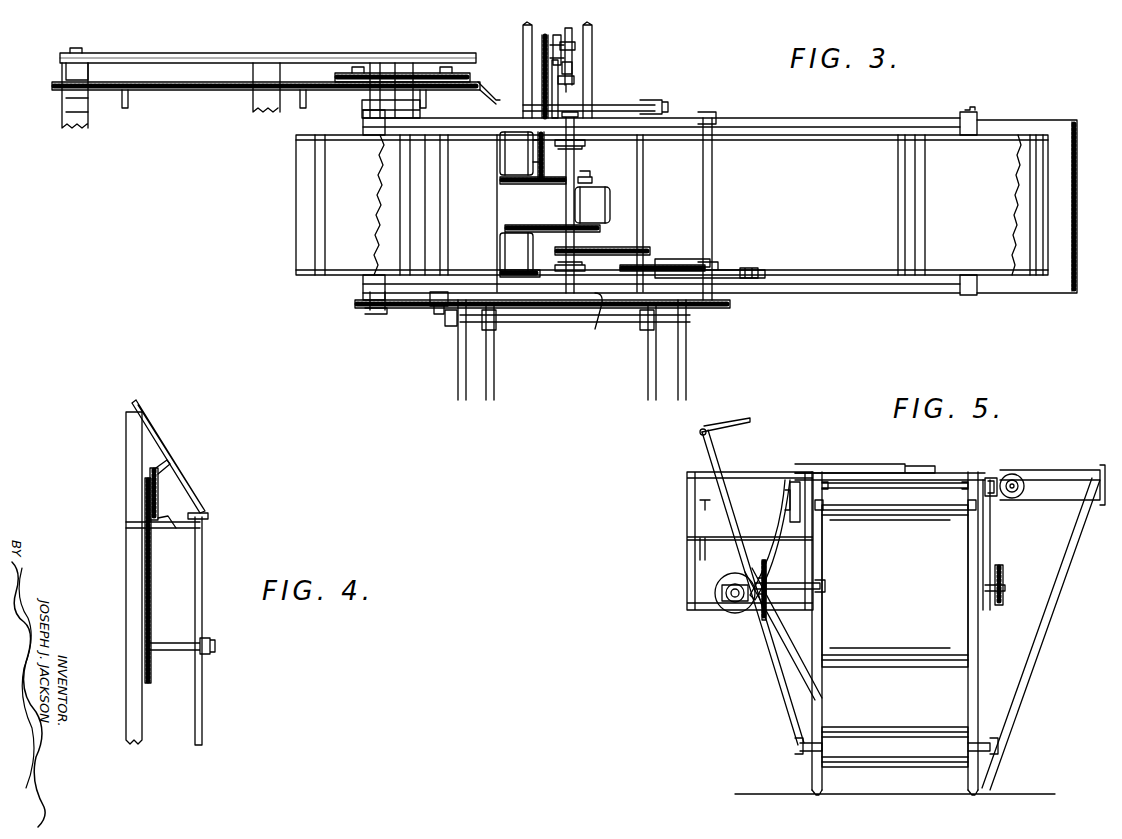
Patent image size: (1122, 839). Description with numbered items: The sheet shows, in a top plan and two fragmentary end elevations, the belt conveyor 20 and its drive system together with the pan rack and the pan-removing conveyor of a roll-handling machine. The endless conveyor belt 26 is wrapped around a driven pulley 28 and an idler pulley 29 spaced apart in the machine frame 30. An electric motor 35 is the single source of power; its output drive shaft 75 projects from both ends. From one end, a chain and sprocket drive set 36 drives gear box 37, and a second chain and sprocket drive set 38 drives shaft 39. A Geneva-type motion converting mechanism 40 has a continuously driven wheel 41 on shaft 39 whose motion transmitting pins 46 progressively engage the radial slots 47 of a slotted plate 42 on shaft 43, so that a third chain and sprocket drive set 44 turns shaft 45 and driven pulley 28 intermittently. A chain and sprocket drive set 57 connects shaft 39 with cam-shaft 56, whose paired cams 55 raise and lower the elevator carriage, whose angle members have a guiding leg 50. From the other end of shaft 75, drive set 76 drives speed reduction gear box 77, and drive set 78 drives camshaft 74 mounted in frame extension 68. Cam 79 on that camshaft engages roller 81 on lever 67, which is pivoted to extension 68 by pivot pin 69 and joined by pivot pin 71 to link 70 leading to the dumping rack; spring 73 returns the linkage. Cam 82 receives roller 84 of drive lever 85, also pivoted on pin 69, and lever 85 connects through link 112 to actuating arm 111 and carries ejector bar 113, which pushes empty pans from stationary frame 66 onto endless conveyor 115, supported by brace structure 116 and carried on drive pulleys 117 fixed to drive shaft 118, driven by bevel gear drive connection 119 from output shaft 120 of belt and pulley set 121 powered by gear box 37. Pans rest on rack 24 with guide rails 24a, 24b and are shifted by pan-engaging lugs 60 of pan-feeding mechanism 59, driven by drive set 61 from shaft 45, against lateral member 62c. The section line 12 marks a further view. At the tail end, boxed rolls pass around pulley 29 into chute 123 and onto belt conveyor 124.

In FIG. 5, the section line 12 is at (711, 663).
In FIG. 3, the belt conveyor 20 is at (272, 200).
In FIG. 3, the rack 24 is at (244, 42).
In FIG. 4, the rack 24 is at (128, 448).
In FIG. 4, the guide rail 24a is at (130, 406).
In FIG. 4, the guide rail 24b is at (202, 508).
In FIG. 3, the conveyor belt 26 is at (332, 240).
In FIG. 5, the conveyor belt 26 is at (890, 640).
In FIG. 3, the driven pulley 28 is at (412, 196).
In FIG. 3, the idler pulley 29 is at (945, 196).
In FIG. 3, the machine frame 30 is at (850, 284).
In FIG. 5, the machine frame 30 is at (983, 688).
In FIG. 3, the electric motor 35 is at (600, 200).
In FIG. 3, the chain and sprocket drive set 36 is at (534, 224).
In FIG. 3, the gear box 37 is at (508, 244).
In FIG. 3, the second chain and sprocket drive set 38 is at (500, 274).
In FIG. 3, the shaft 39 is at (644, 158).
In FIG. 3, the motion converting mechanism 40 is at (689, 246).
In FIG. 3, the continuously driven wheel 41 is at (658, 264).
In FIG. 3, the radially slotted plate 42 is at (725, 273).
In FIG. 3, the shaft 43 is at (712, 165).
In FIG. 3, the third chain and sprocket drive set 44 is at (388, 310).
In FIG. 5, the third chain and sprocket drive set 44 is at (1002, 564).
In FIG. 3, the shaft 45 is at (370, 300).
In FIG. 4, the shaft 45 is at (168, 642).
In FIG. 5, the shaft 45 is at (821, 588).
In FIG. 3, the motion transmitting pins 46 is at (604, 314).
In FIG. 3, the radial slots 47 is at (742, 261).
In FIG. 5, the leg 50 is at (822, 507).
In FIG. 3, the cams 55 is at (588, 143).
In FIG. 3, the cam-shaft 56 is at (573, 161).
In FIG. 3, the chain and sprocket drive set 57 is at (628, 238).
In FIG. 3, the chain and sprocket pan-feeding mechanism 59 is at (213, 92).
In FIG. 4, the chain and sprocket pan-feeding mechanism 59 is at (160, 487).
In FIG. 3, the pan-engaging lugs 60 is at (128, 108).
In FIG. 4, the pan-engaging lugs 60 is at (166, 461).
In FIG. 3, the chain and sprocket drive set 61 is at (406, 73).
In FIG. 4, the chain and sprocket drive set 61 is at (152, 589).
In FIG. 4, the lateral member 62c is at (164, 434).
In FIG. 5, the stationary frame 66 is at (949, 474).
In FIG. 3, the lever 67 is at (559, 89).
In FIG. 5, the lever 67 is at (716, 452).
In FIG. 3, the extension 68 is at (591, 90).
In FIG. 5, the extension 68 is at (687, 571).
In FIG. 5, the pivot pin 69 is at (748, 630).
In FIG. 5, the link 70 is at (741, 420).
In FIG. 5, the pivot pin 71 is at (700, 438).
In FIG. 5, the spring 73 is at (710, 515).
In FIG. 3, the camshaft 74 is at (577, 45).
In FIG. 5, the camshaft 74 is at (735, 606).
In FIG. 3, the output drive shaft 75 is at (593, 171).
In FIG. 3, the chain and sprocket drive set 76 is at (500, 179).
In FIG. 3, the speed reduction gear box 77 is at (502, 148).
In FIG. 3, the chain and sprocket drive set 78 is at (539, 151).
In FIG. 3, the cam 79 is at (558, 36).
In FIG. 3, the roller 81 is at (538, 72).
In FIG. 3, the cam 82 is at (574, 29).
In FIG. 3, the roller 84 is at (574, 76).
In FIG. 3, the drive lever 85 is at (575, 64).
In FIG. 5, the drive lever 85 is at (777, 522).
In FIG. 5, the actuating arm 111 is at (788, 491).
In FIG. 5, the link 112 is at (786, 503).
In FIG. 5, the ejector bar 113 is at (858, 462).
In FIG. 3, the endless conveyor 115 is at (494, 373).
In FIG. 5, the endless conveyor 115 is at (1078, 470).
In FIG. 3, the brace structure 116 is at (458, 370).
In FIG. 5, the brace structure 116 is at (1038, 609).
In FIG. 3, the drive pulleys 117 is at (495, 330).
In FIG. 5, the drive pulleys 117 is at (1027, 474).
In FIG. 3, the drive shaft 118 is at (561, 323).
In FIG. 3, the bevel gear drive connection 119 is at (449, 322).
In FIG. 5, the bevel gear drive connection 119 is at (1016, 473).
In FIG. 3, the output shaft 120 is at (438, 306).
In FIG. 5, the output shaft 120 is at (1000, 473).
In FIG. 5, the belt and pulley set 121 is at (991, 522).
In FIG. 3, the chute 123 is at (1033, 118).
In FIG. 5, the belt conveyor 124 is at (890, 740).